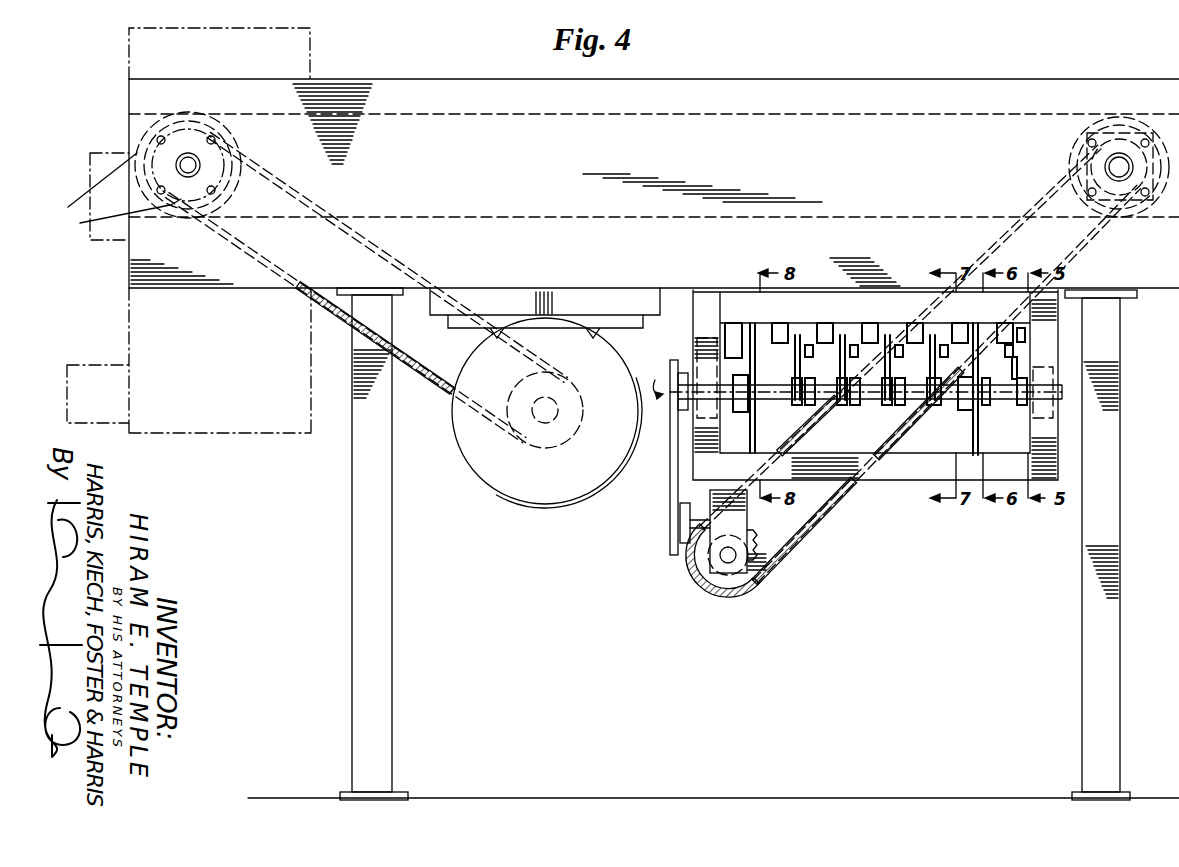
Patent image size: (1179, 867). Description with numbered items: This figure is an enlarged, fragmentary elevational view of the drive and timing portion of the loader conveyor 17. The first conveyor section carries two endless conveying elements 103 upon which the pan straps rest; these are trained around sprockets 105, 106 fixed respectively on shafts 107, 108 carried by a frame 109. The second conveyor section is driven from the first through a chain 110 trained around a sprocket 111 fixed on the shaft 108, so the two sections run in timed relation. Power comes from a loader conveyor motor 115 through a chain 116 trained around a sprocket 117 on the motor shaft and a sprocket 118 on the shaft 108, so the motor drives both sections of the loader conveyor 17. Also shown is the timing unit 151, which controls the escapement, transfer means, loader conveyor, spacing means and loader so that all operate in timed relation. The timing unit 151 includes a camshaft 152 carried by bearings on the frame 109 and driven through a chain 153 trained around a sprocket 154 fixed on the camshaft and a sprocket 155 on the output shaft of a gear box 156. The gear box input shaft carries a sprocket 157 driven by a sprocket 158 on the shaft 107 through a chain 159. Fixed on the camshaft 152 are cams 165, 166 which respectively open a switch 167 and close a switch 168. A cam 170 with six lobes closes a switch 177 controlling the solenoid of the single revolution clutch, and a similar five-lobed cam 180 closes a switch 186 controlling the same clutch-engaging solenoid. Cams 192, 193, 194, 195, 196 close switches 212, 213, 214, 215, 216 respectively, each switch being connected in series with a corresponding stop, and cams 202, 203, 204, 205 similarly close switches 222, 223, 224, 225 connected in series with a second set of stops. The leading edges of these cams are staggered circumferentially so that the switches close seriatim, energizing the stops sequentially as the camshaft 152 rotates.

The loader conveyor 17 is at (977, 106).
The endless conveying elements 103 is at (435, 105).
The sprocket 105 is at (1100, 118).
The sprocket 106 is at (226, 132).
The shaft 107 is at (1106, 167).
The shaft 108 is at (187, 157).
The frame 109 is at (346, 504).
The chain 110 is at (109, 212).
The sprocket 111 is at (173, 205).
The loader conveyor motor 115 is at (521, 499).
The chain 116 is at (443, 393).
The sprocket 117 is at (522, 386).
The sprocket 118 is at (253, 178).
The timing unit 151 is at (890, 486).
The camshaft 152 is at (815, 415).
The chain 153 is at (670, 479).
The sprocket 154 is at (683, 373).
The sprocket 155 is at (680, 535).
The gear box 156 is at (750, 592).
The sprocket 157 is at (690, 572).
The sprocket 158 is at (1116, 214).
The chain 159 is at (797, 538).
The cam 165 is at (1020, 365).
The cam 166 is at (995, 405).
The switch 167 is at (1013, 340).
The switch 168 is at (1019, 330).
The cam 170 is at (972, 423).
The switch 177 is at (1003, 325).
The cam 180 is at (756, 434).
The switch 186 is at (735, 357).
The cam 192 is at (795, 406).
The cam 193 is at (845, 406).
The cam 194 is at (886, 406).
The cam 195 is at (930, 406).
The cam 196 is at (945, 410).
The cam 202 is at (797, 372).
The cam 203 is at (842, 375).
The cam 204 is at (887, 372).
The cam 205 is at (932, 372).
The switch 212 is at (778, 325).
The switch 213 is at (834, 325).
The switch 214 is at (868, 330).
The switch 215 is at (922, 325).
The switch 216 is at (960, 335).
The switch 222 is at (806, 345).
The switch 223 is at (850, 348).
The switch 224 is at (897, 345).
The switch 225 is at (940, 348).